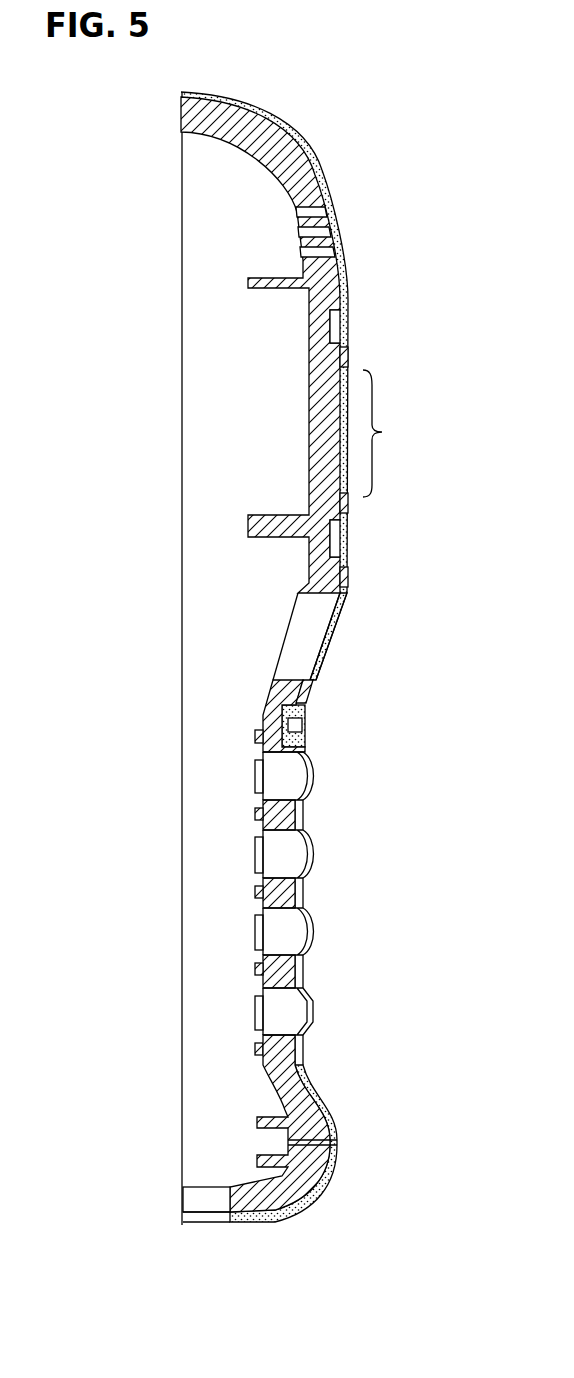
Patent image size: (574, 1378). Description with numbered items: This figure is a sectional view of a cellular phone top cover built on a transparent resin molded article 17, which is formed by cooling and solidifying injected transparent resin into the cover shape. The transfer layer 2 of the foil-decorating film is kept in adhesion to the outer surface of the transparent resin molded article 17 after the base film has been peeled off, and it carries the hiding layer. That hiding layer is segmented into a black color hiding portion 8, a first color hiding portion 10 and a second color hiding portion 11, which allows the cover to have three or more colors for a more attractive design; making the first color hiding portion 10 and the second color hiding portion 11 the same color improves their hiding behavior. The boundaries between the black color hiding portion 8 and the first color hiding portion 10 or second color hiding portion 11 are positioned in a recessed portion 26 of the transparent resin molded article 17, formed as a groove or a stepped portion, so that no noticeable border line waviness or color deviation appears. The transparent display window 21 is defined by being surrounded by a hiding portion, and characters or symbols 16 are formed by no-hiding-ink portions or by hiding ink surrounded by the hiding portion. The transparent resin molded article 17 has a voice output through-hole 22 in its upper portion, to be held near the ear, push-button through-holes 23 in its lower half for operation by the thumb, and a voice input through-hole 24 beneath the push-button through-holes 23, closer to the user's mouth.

The transfer layer 2 is at (257, 109).
The black color hiding portion 8 is at (348, 350).
The first color hiding portion 10 is at (307, 132).
The second color hiding portion 11 is at (305, 742).
The characters or symbols 16 is at (347, 573).
The transparent resin molded article 17 is at (197, 115).
The transparent display window 21 is at (389, 433).
The voice output through-hole 22 is at (320, 253).
The push-button through-holes 23 is at (307, 633).
The voice input through-hole 24 is at (325, 1140).
The recessed portion 26 is at (349, 320).